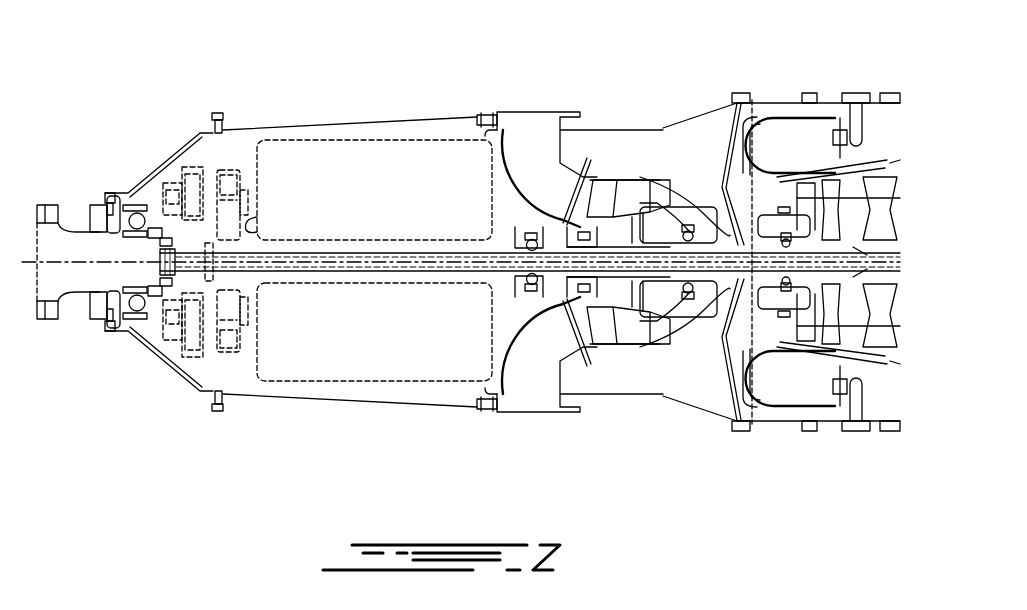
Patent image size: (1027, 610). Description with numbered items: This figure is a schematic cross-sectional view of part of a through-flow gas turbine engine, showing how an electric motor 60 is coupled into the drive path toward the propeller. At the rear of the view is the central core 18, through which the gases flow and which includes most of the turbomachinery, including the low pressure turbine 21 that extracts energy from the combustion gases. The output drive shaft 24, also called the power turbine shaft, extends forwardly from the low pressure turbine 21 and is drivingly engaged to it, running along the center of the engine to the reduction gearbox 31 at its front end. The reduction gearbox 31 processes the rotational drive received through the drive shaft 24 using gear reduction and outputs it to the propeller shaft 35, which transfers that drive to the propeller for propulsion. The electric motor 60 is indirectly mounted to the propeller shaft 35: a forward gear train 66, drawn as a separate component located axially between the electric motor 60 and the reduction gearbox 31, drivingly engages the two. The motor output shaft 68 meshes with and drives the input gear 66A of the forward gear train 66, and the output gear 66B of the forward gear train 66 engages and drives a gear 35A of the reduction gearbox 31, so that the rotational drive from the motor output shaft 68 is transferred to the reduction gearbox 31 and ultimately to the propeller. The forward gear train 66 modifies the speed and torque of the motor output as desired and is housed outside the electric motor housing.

The central core 18 is at (726, 225).
The low pressure turbine 21 is at (878, 302).
The output drive shaft 24 is at (503, 268).
The reduction gearbox 31 is at (179, 149).
The propeller shaft 35 is at (63, 326).
The gear of the reduction gearbox 35A is at (197, 156).
The electric motor 60 is at (289, 158).
The forward gear train 66 is at (264, 185).
The input gear 66A is at (247, 303).
The output gear 66B is at (233, 170).
The motor output shaft 68 is at (258, 223).